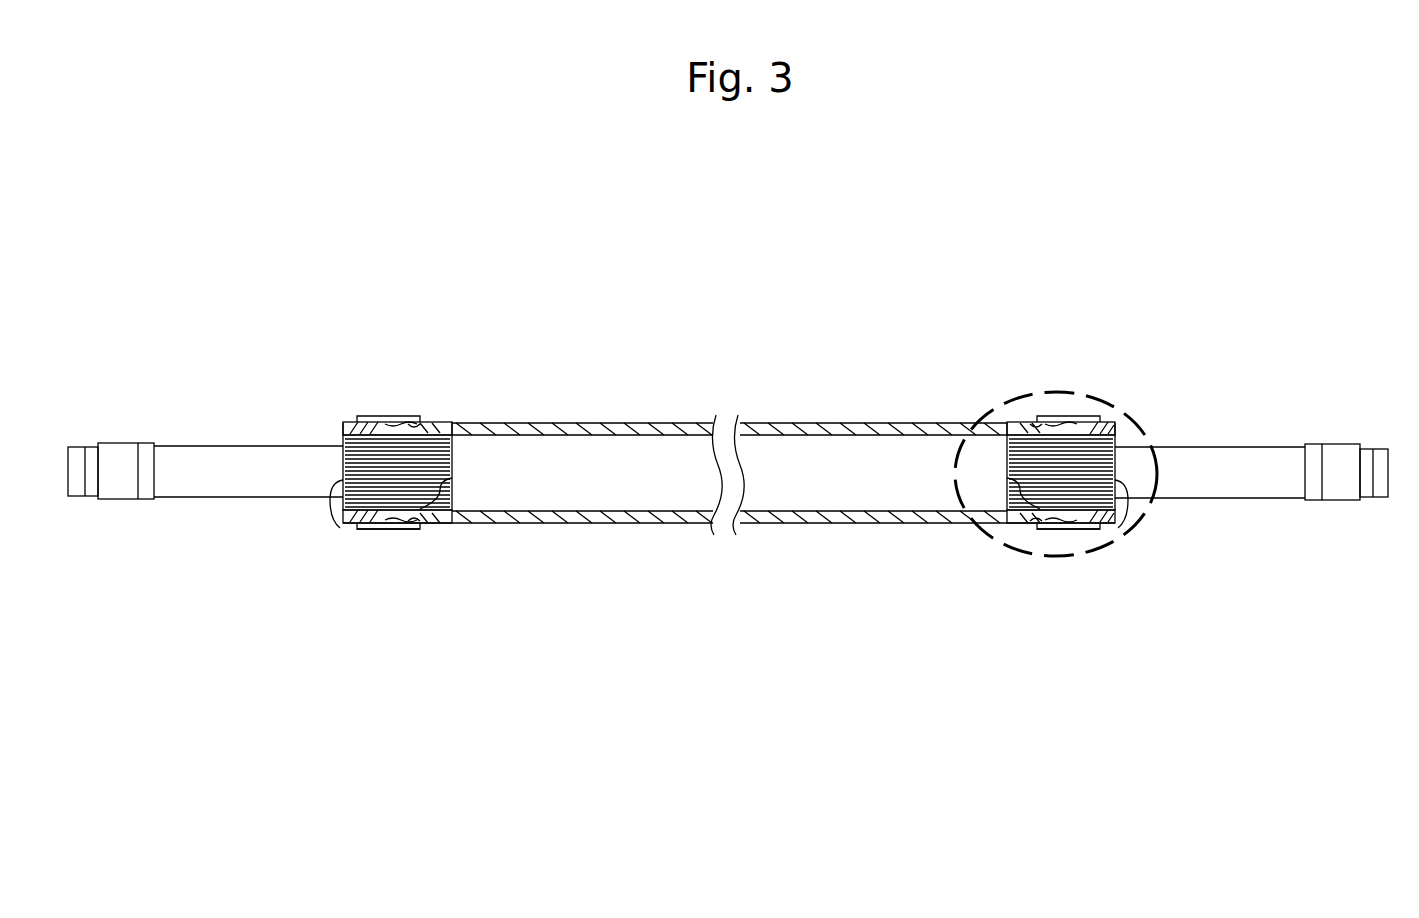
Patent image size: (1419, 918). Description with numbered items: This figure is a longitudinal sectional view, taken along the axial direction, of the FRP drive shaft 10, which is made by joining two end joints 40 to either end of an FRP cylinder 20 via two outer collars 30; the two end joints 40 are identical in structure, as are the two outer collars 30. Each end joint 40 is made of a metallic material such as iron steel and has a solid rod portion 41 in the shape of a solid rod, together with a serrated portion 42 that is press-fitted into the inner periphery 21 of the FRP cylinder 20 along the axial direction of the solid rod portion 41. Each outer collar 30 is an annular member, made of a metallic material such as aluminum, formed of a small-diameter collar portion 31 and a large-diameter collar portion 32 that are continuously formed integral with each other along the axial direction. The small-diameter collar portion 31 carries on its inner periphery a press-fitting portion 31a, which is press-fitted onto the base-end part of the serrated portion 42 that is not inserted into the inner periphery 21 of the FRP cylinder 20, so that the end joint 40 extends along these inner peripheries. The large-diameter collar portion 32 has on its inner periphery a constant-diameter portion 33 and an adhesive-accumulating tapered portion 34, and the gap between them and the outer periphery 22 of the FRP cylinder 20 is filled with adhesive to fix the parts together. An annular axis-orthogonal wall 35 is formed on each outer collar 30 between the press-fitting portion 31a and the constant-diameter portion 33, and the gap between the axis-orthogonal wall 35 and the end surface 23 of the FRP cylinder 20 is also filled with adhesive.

The FRP drive shaft 10 is at (292, 393).
The FRP cylinder 20 is at (600, 418).
The inner periphery 21 is at (445, 488).
The outer periphery 22 is at (612, 523).
The end surface 23 is at (343, 430).
The outer collar 30 is at (393, 413).
The small-diameter collar portion 31 is at (342, 525).
The press-fitting portion 31a is at (358, 524).
The large-diameter collar portion 32 is at (508, 368).
The constant-diameter portion 33 is at (398, 425).
The adhesive-accumulating tapered portion 34 is at (443, 425).
The axis-orthogonal wall 35 is at (378, 425).
The end joint 40 is at (221, 440).
The solid rod portion 41 is at (222, 478).
The serrated portion 42 is at (338, 522).